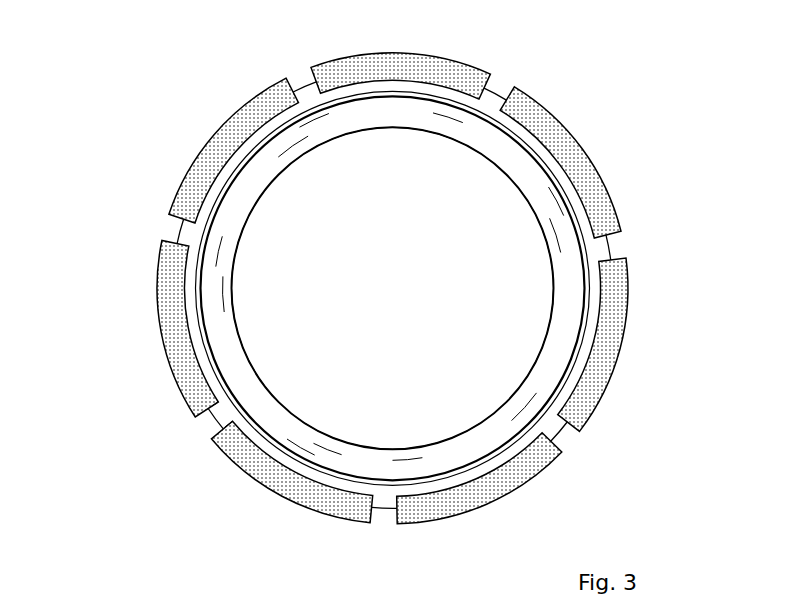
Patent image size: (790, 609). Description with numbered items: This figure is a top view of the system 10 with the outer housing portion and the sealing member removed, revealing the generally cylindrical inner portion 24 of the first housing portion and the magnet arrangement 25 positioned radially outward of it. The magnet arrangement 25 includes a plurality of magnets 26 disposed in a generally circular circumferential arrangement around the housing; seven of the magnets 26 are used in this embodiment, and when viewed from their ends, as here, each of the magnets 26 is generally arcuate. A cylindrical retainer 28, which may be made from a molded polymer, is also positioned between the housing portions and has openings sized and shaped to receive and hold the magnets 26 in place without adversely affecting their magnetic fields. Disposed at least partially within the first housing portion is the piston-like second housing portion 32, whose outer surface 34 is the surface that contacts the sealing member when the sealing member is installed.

The system 10 is at (406, 302).
The inner portion 24 is at (293, 448).
The magnet arrangement 25 is at (171, 376).
The magnets 26 is at (427, 55).
The retainer 28 is at (213, 425).
The second housing portion 32 is at (518, 362).
The outer surface 34 is at (352, 345).